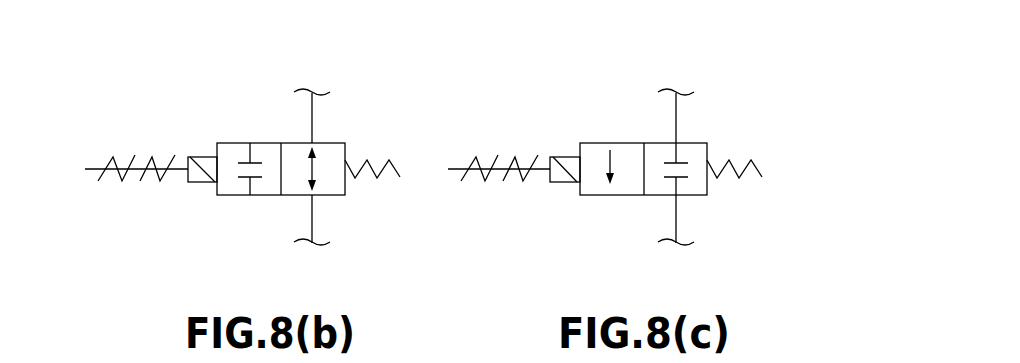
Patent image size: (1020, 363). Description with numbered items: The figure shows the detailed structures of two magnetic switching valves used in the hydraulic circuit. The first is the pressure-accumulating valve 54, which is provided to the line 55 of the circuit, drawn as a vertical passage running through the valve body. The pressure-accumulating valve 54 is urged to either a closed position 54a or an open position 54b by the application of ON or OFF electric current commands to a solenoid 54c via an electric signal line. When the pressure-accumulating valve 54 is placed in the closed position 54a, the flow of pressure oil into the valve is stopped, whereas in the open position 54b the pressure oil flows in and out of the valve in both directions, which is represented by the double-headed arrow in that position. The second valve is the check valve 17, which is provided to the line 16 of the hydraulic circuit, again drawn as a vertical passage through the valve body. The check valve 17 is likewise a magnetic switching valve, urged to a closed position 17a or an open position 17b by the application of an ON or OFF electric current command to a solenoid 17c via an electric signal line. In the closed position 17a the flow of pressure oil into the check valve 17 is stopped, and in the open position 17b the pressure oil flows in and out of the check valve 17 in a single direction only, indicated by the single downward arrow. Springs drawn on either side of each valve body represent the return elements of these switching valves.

In FIG. 8B, the pressure-accumulating valve 54 is at (354, 97).
In FIG. 8B, the closed position 54a is at (230, 196).
In FIG. 8B, the open position 54b is at (335, 196).
In FIG. 8B, the solenoid 54c is at (205, 157).
In FIG. 8B, the line 55 is at (312, 122).
In FIG. 8C, the check valve 17 is at (726, 101).
In FIG. 8C, the closed position 17a is at (695, 196).
In FIG. 8C, the open position 17b is at (592, 196).
In FIG. 8C, the solenoid 17c is at (568, 157).
In FIG. 8C, the line 16 is at (676, 122).